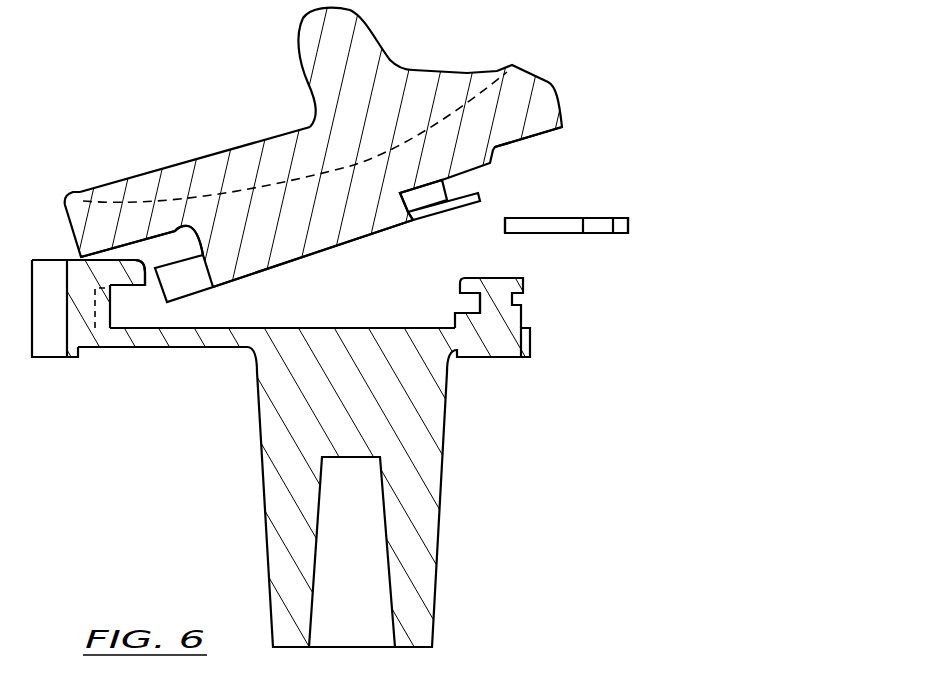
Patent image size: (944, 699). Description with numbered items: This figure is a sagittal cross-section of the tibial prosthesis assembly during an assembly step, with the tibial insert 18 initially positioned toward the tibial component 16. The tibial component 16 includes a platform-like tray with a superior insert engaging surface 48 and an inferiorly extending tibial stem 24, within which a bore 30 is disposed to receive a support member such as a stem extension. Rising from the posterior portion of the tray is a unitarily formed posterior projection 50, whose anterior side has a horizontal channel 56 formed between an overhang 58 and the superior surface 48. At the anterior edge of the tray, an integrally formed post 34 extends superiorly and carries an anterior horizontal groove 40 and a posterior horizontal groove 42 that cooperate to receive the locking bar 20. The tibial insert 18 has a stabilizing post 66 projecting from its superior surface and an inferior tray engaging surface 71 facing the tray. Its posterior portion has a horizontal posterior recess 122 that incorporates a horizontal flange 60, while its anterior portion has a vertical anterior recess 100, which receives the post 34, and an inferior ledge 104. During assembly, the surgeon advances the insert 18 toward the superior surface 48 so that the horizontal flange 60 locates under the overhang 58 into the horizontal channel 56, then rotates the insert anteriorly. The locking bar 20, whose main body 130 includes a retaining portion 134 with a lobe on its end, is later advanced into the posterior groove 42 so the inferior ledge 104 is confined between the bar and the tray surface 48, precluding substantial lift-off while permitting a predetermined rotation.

The tibial insert 18 is at (518, 90).
The stabilizing post 66 is at (340, 40).
The vertical anterior recess 100 is at (536, 138).
The inferior tray engaging surface 71 is at (369, 237).
The horizontal posterior recess 122 is at (165, 237).
The horizontal flange 60 is at (187, 275).
The inferior ledge 104 is at (470, 192).
The locking bar 20 is at (568, 224).
The main body 130 is at (520, 227).
The retaining portion 134 is at (632, 226).
The posterior projection 50 is at (82, 307).
The overhang 58 is at (135, 275).
The horizontal channel 56 is at (113, 307).
The superior insert engaging surface 48 is at (295, 323).
The tibial stem 24 is at (443, 477).
The bore 30 is at (318, 597).
The anterior horizontal groove 40 is at (516, 302).
The posterior horizontal groove 42 is at (478, 306).
The post 34 is at (493, 278).
The tibial component 16 is at (533, 337).